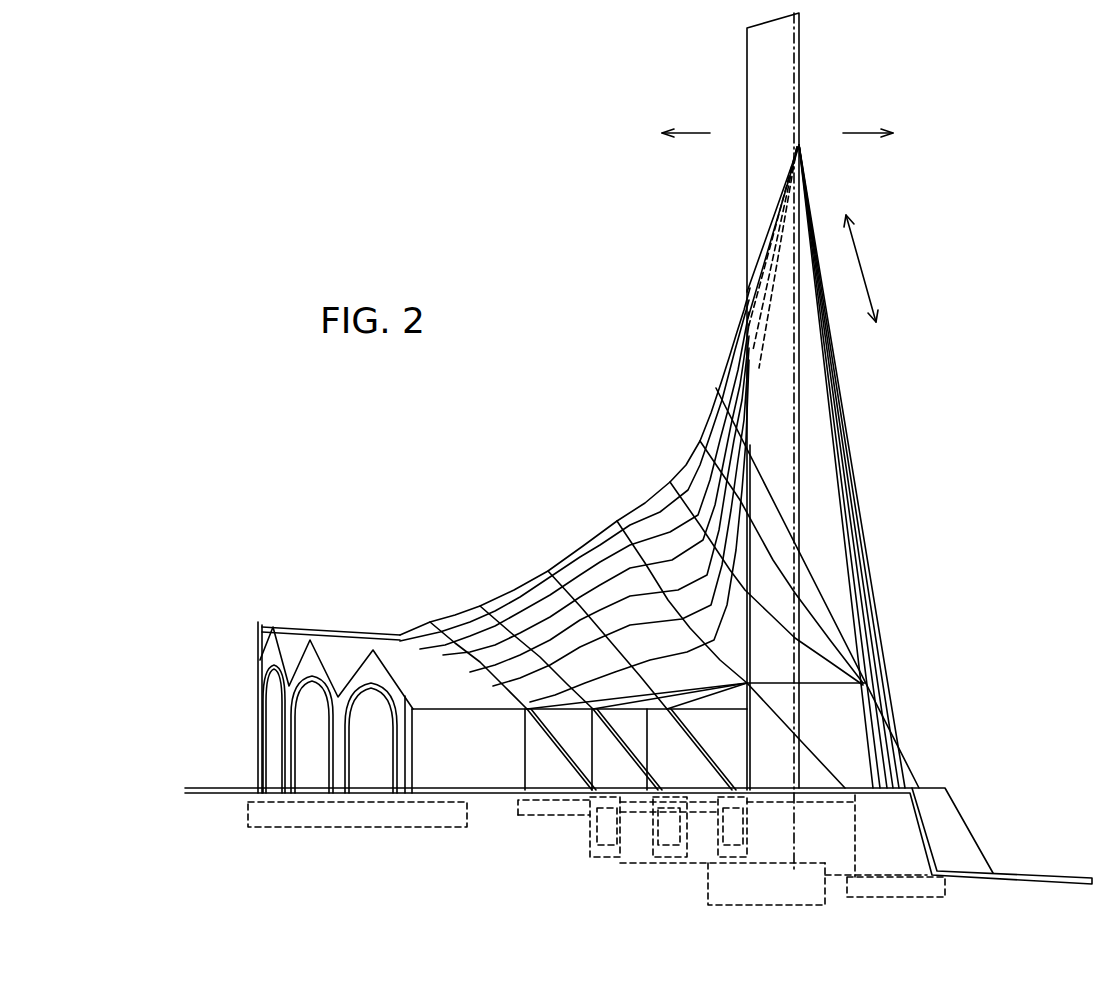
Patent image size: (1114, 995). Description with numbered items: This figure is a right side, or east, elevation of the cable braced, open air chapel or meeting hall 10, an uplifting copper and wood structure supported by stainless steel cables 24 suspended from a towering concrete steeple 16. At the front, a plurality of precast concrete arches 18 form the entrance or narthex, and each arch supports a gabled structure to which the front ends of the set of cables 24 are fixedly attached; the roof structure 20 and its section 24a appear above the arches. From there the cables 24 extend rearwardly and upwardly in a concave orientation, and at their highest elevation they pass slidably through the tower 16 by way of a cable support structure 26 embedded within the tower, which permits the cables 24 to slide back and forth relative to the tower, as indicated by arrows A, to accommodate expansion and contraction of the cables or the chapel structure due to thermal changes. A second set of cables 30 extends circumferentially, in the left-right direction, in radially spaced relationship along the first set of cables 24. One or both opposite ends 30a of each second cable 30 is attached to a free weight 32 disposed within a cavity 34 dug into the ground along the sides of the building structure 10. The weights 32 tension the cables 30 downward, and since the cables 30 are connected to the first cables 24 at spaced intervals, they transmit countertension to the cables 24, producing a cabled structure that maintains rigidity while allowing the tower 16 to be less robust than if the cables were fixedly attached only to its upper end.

The open air chapel or meeting hall 10 is at (233, 705).
The concrete steeple 16 is at (778, 92).
The precast concrete arches 18 is at (270, 703).
The roof cable surface 20 is at (537, 573).
The stainless steel cables 24 is at (447, 613).
The sawtooth roof section 24a is at (373, 650).
The cable support structure 26 is at (790, 148).
The second set of cables 30 is at (686, 505).
The ends of second cables 30a is at (732, 800).
The free weight 32 is at (727, 833).
The cavity 34 is at (749, 852).
The arrows A is at (858, 258).